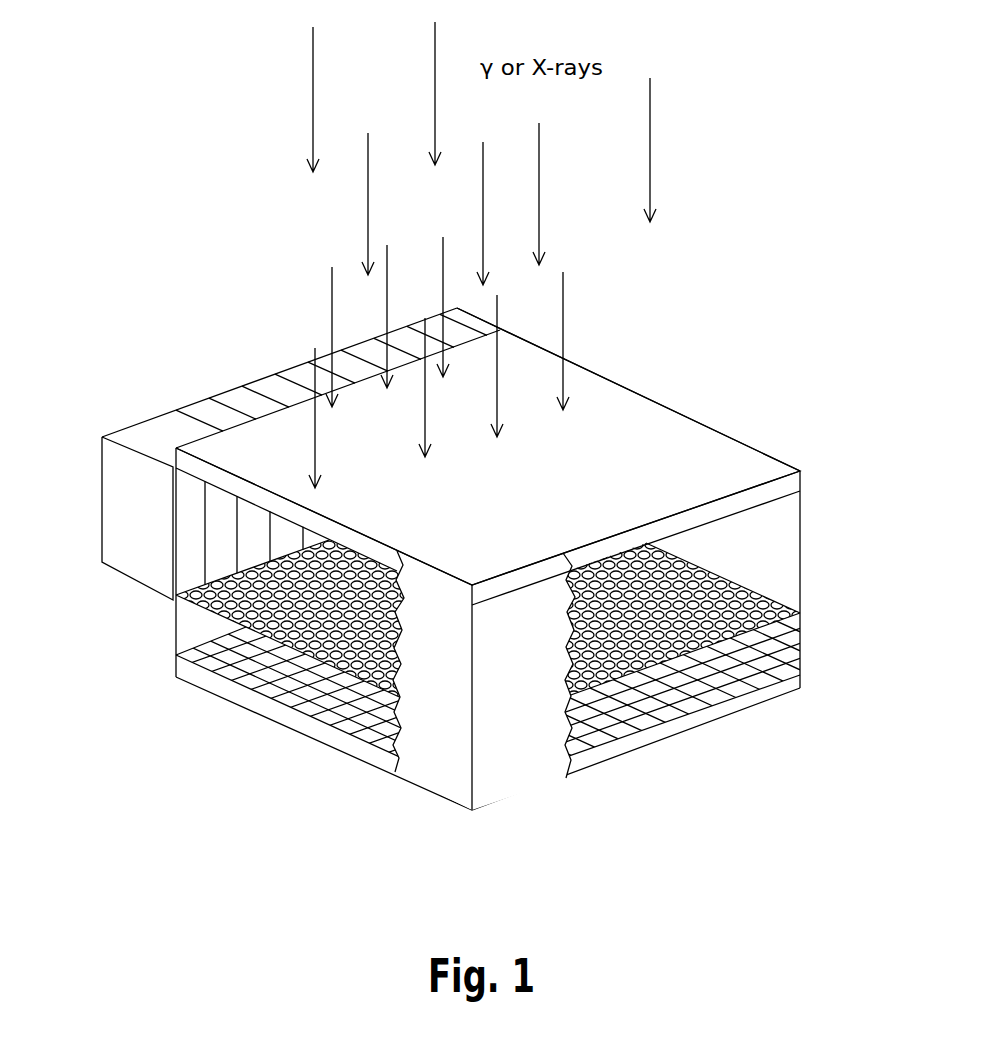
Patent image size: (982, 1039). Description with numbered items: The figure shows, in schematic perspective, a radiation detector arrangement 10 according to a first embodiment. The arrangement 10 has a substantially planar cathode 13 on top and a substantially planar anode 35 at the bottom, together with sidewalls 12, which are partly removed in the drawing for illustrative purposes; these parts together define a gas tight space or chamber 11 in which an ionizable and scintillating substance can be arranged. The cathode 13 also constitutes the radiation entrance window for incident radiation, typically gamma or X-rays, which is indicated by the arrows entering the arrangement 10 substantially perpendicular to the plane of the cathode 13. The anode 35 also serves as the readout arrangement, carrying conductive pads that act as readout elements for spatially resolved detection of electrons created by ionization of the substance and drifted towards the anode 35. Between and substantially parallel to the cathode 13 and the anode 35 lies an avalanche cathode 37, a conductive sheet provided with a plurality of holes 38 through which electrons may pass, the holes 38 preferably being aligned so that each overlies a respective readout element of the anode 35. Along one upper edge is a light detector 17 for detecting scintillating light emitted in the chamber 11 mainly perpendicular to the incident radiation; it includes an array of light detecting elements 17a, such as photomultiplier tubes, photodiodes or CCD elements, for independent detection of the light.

The radiation detector arrangement 10 is at (722, 341).
The gas tight space or chamber 11 is at (727, 555).
The sidewalls 12 is at (513, 758).
The cathode 13 is at (703, 425).
The light detector 17 is at (195, 378).
The light detecting elements 17a is at (145, 443).
The anode 35 is at (777, 698).
The avalanche cathode 37 is at (790, 632).
The holes 38 is at (770, 605).